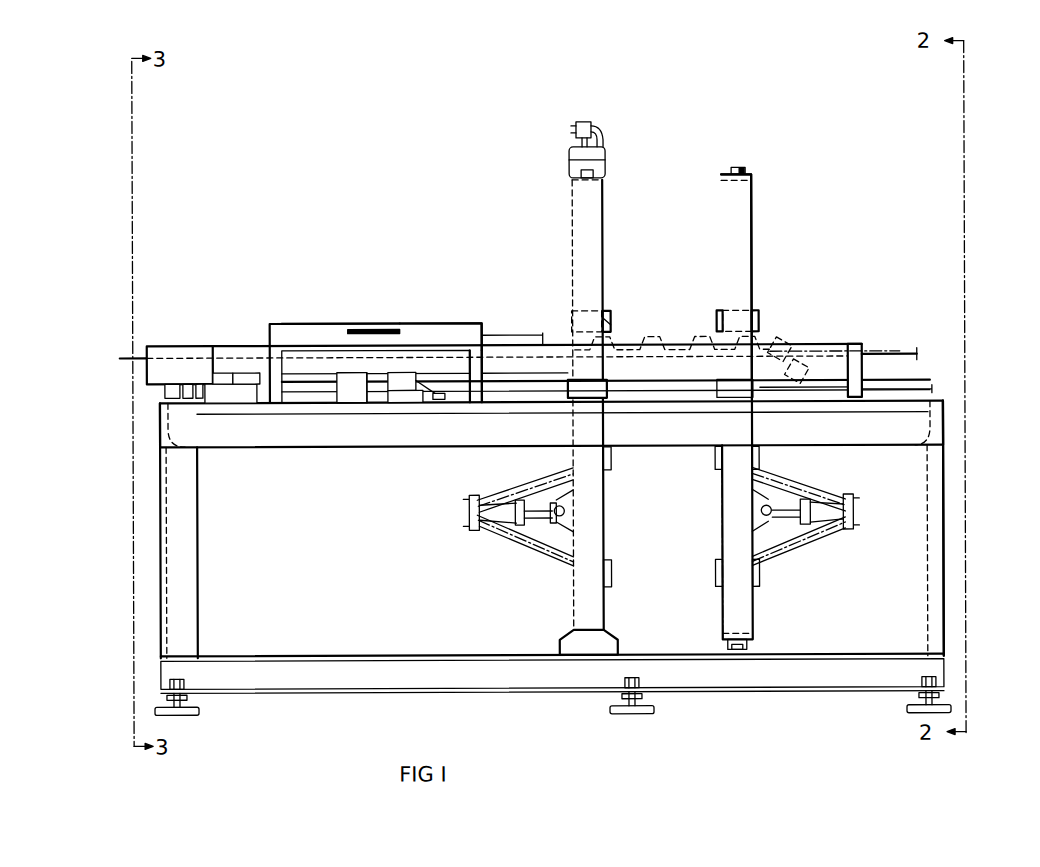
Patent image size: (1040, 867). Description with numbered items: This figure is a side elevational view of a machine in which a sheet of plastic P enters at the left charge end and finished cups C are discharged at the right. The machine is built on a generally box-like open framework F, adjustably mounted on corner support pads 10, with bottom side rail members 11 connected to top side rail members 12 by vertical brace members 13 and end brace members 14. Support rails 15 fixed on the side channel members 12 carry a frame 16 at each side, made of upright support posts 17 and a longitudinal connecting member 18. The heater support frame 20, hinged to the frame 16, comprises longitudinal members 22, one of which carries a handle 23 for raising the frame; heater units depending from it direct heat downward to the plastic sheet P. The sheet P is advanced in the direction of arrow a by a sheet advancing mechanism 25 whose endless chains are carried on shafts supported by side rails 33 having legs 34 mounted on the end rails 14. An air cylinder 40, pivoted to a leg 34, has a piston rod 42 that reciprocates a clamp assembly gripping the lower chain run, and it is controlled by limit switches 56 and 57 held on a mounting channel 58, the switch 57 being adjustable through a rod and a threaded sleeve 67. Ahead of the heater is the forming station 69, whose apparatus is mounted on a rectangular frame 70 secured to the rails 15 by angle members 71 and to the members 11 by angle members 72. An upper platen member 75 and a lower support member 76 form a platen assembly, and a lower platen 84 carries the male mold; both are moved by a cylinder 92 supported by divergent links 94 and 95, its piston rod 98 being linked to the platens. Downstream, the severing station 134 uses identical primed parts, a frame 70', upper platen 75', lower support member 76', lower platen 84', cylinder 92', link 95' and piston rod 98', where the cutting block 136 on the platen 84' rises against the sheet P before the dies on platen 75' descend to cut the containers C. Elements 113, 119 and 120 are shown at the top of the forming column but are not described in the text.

The corner support pads 10 is at (180, 715).
The bottom side rail members 11 is at (276, 691).
The top side rail members 12 is at (398, 447).
The vertical brace members 13 is at (182, 533).
The end brace members 14 is at (165, 432).
The support rails 15 is at (252, 405).
The frame 16 is at (486, 338).
The upright support posts 17 is at (490, 381).
The longitudinal connecting member 18 is at (279, 330).
The heater support frame 20 is at (336, 327).
The longitudinal members 22 is at (430, 325).
The handle 23 is at (382, 330).
The sheet advancing mechanism 25 is at (352, 412).
The side rails 33 is at (157, 378).
The legs 34 is at (168, 390).
The air cylinder 40 is at (228, 392).
The piston rod 42 is at (333, 392).
The limit switch 56 is at (252, 372).
The limit switch 57 is at (400, 372).
The mounting channel 58 is at (223, 372).
The sleeve 67 is at (439, 399).
The forming station 69 is at (607, 318).
The frame 70 is at (617, 405).
The frame 70' is at (768, 411).
The angle members 71 is at (586, 399).
The angle members 72 is at (606, 641).
The upper platen member 75 is at (618, 312).
The upper platen 75' is at (768, 310).
The lower support member 76 is at (632, 573).
The lower support member 76' is at (713, 572).
The lower platen 84 is at (635, 461).
The lower platen 84' is at (766, 458).
The cylinder 92 is at (484, 536).
The cylinder 92' is at (864, 511).
The link 94 is at (532, 486).
The link 95 is at (525, 551).
The link 95' is at (800, 541).
The piston rod 98 is at (544, 546).
The piston rod 98' is at (798, 526).
The valve 113 is at (573, 156).
The fitting 119 is at (585, 122).
The hose 120 is at (606, 135).
The severing station 134 is at (757, 248).
The cutting block 136 is at (765, 346).
The cup-shaped containers C is at (685, 334).
The plastic sheet P is at (893, 352).
The framework F is at (944, 520).
The arrow a is at (140, 365).